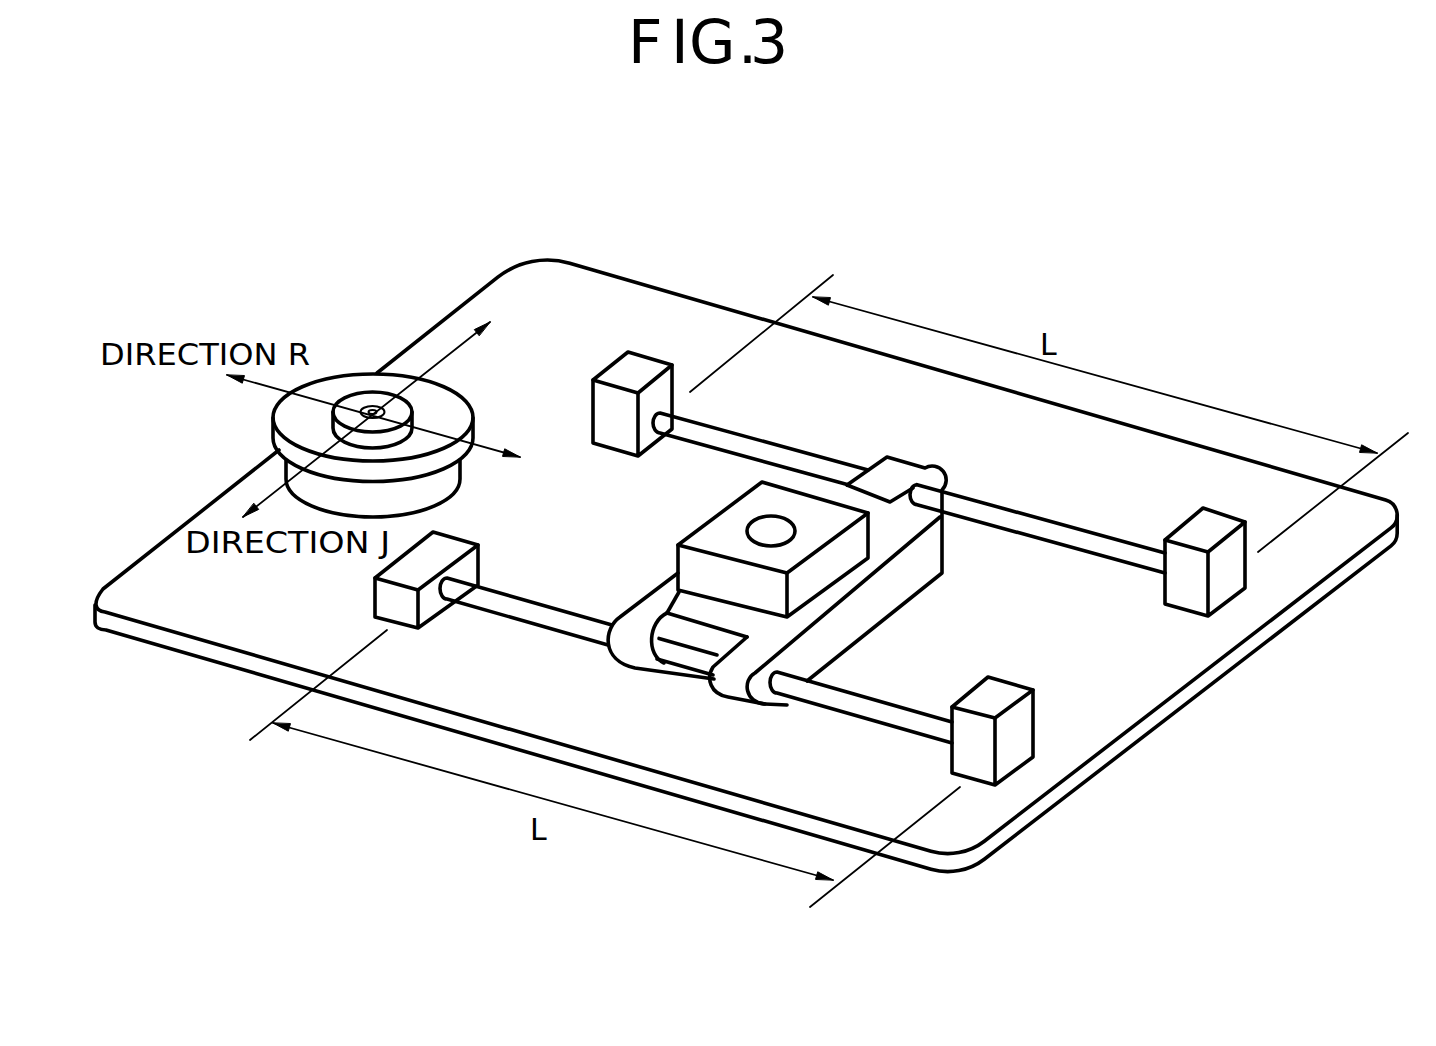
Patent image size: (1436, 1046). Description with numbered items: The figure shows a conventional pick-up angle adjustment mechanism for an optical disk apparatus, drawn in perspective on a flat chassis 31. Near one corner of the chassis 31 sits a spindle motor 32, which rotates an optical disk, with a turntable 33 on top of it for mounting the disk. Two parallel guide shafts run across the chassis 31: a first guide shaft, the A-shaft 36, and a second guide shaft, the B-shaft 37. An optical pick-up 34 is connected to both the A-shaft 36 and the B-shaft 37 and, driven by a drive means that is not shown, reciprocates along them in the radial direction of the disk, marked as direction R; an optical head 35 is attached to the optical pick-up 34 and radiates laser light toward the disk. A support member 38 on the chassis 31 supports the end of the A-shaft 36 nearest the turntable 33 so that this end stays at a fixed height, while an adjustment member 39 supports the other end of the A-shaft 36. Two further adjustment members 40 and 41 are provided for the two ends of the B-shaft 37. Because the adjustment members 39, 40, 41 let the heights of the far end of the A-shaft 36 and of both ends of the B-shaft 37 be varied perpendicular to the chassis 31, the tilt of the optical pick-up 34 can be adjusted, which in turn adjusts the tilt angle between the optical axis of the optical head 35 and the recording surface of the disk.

The chassis 31 is at (1133, 675).
The spindle motor 32 is at (423, 498).
The turntable 33 is at (294, 430).
The optical pick-up 34 is at (887, 603).
The optical head 35 is at (747, 528).
The first guide shaft (A-shaft) 36 is at (683, 655).
The second guide shaft (B-shaft) 37 is at (795, 458).
The support member 38 is at (387, 598).
The adjustment member 39 is at (1013, 730).
The adjustment member 40 is at (617, 370).
The adjustment member 41 is at (1193, 527).